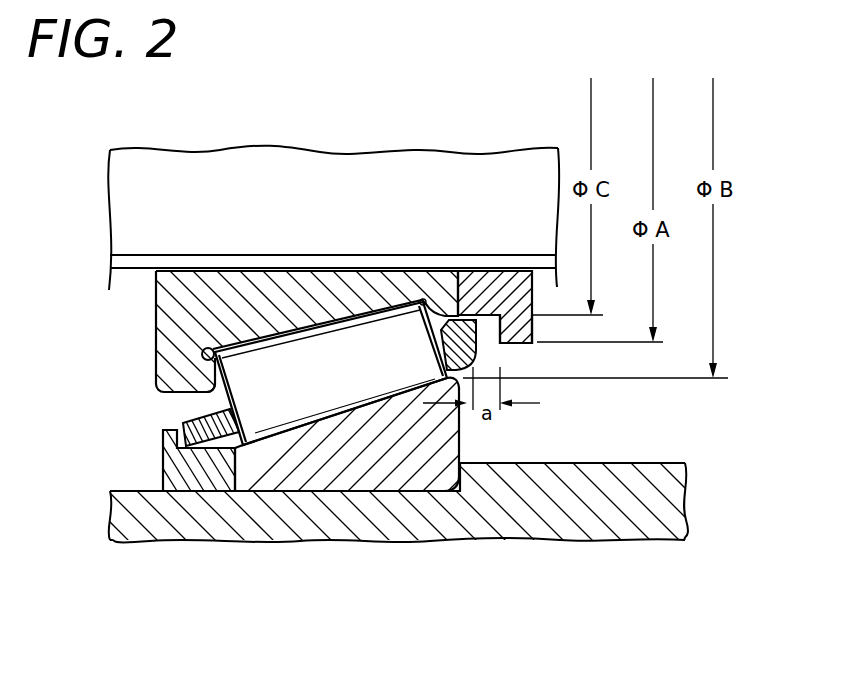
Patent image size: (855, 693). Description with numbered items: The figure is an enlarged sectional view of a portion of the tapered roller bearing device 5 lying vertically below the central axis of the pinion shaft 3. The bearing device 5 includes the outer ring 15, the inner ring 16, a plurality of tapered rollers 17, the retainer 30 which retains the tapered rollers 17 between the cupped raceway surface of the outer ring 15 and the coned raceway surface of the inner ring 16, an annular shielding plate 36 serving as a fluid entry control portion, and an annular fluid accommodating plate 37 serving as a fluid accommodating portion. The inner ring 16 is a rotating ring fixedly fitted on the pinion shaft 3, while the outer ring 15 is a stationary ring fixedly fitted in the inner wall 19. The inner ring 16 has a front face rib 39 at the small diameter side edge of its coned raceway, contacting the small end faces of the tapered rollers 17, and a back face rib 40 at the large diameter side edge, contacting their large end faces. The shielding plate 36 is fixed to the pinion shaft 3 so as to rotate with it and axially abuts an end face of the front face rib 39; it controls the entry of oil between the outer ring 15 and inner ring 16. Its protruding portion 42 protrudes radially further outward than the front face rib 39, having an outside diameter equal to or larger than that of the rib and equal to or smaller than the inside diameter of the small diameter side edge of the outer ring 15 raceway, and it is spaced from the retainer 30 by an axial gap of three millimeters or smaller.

The pinion shaft 3 is at (290, 178).
The tapered roller bearing device 5 is at (201, 236).
The outer ring 15 is at (365, 467).
The inner ring 16 is at (183, 313).
The tapered rollers 17 is at (290, 405).
The inner wall 19 is at (557, 515).
The retainer 30 is at (182, 424).
The shielding plate 36 is at (490, 290).
The fluid accommodating plate 37 is at (163, 463).
The front face rib 39 is at (430, 300).
The back face rib 40 is at (205, 378).
The protruding portion 42 is at (535, 327).